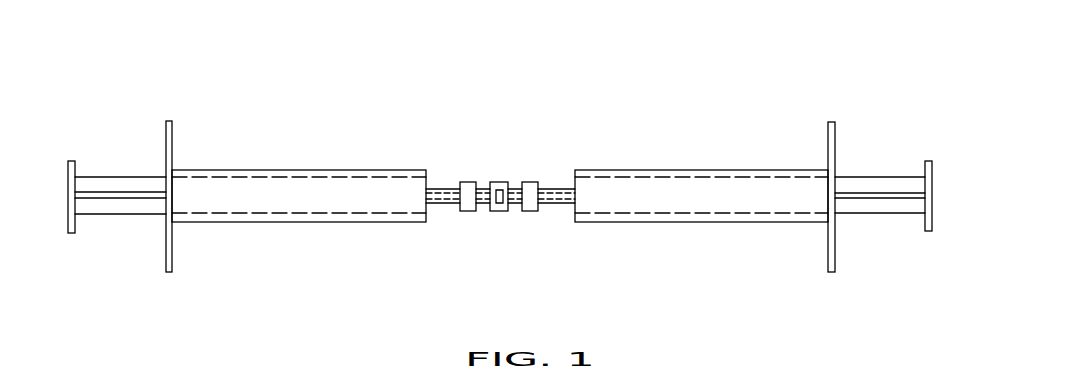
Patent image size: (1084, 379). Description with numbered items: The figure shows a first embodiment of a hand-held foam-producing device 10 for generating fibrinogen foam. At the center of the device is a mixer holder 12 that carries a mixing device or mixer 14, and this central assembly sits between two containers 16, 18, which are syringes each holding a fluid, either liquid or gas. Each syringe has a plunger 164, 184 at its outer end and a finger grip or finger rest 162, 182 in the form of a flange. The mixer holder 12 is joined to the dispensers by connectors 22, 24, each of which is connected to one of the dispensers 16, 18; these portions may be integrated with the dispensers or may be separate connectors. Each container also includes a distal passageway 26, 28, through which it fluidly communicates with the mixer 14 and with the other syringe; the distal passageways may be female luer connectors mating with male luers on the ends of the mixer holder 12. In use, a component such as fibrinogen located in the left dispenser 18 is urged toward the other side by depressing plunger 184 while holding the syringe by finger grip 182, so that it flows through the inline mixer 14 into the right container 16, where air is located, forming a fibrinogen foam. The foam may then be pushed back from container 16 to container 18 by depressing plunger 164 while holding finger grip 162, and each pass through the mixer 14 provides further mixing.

The foam-producing device 10 is at (663, 96).
The mixer holder 12 is at (500, 212).
The mixer 14 is at (496, 200).
The container 16 is at (720, 222).
The container 18 is at (271, 222).
The connector 22 is at (466, 212).
The connector 24 is at (531, 212).
The distal passageway 26 is at (553, 190).
The distal passageway 28 is at (442, 190).
The finger grip 162 is at (836, 140).
The plunger 164 is at (925, 225).
The finger grip 182 is at (172, 255).
The plunger 184 is at (77, 167).